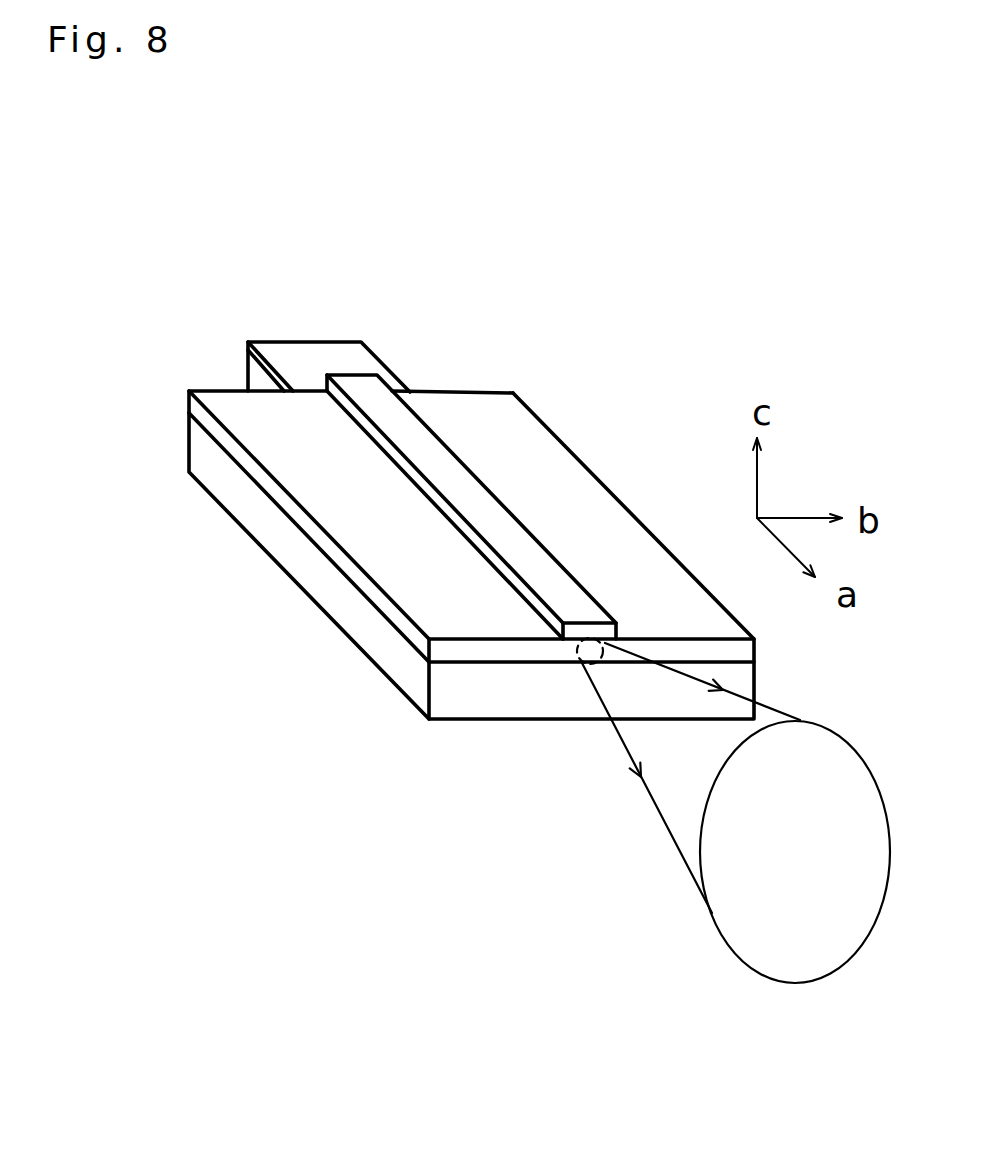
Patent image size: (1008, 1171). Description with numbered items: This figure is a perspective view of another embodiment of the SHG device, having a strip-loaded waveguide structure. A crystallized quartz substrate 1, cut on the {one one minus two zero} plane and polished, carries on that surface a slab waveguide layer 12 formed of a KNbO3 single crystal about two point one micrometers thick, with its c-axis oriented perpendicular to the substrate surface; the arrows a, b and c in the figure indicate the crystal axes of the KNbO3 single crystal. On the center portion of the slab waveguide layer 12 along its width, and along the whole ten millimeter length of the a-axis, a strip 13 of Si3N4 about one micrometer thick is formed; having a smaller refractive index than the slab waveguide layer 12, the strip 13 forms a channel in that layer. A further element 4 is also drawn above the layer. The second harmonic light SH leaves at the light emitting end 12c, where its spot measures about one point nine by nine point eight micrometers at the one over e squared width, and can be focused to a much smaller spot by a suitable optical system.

The crystallized quartz substrate 1 is at (208, 447).
The slab waveguide layer 12 is at (200, 413).
The light emitting end 12c is at (457, 650).
The strip 13 is at (440, 468).
The electrode 4 is at (322, 357).
The second harmonic light SH is at (583, 664).